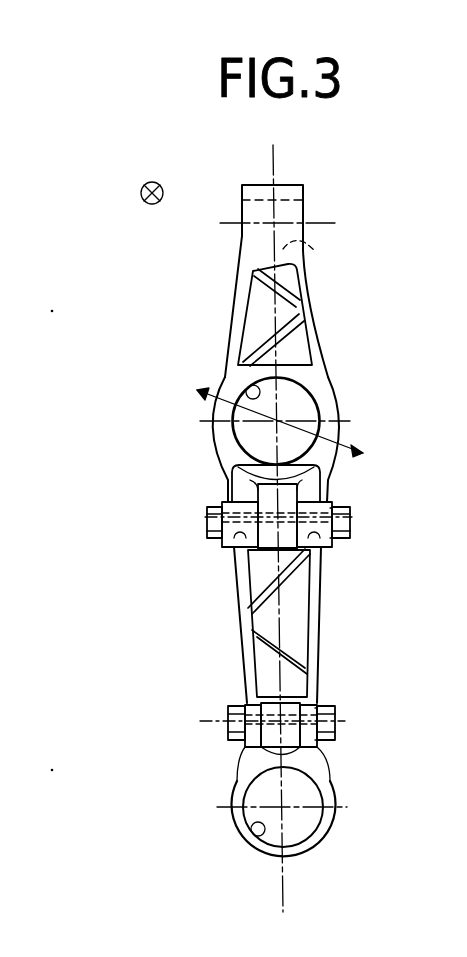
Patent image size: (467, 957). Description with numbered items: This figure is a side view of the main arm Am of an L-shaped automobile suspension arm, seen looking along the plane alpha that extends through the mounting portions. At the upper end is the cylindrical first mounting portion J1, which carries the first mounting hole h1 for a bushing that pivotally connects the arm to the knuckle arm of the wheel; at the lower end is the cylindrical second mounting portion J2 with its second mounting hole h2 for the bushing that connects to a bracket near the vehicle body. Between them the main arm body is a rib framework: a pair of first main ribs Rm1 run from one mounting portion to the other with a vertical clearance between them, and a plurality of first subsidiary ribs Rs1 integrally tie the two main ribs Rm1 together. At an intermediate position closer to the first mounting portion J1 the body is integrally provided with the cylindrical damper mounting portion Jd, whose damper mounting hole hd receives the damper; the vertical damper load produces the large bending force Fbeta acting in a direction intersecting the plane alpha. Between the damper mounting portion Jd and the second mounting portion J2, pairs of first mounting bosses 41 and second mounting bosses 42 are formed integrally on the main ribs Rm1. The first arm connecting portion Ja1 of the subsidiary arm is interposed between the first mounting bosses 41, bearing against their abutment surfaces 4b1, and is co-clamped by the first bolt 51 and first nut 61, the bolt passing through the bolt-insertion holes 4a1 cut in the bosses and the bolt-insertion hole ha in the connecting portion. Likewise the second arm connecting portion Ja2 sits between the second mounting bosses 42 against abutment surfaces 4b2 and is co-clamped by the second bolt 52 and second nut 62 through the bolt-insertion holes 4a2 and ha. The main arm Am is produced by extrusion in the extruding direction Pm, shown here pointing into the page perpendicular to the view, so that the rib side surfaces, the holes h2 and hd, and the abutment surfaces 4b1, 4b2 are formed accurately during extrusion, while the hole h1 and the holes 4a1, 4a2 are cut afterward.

The first mounting portion J1 is at (307, 181).
The first mounting hole h1 is at (316, 244).
The first main ribs Rm1 is at (236, 291).
The first subsidiary ribs Rs1 is at (250, 350).
The damper mounting hole hd is at (246, 391).
The damper mounting portion Jd is at (339, 386).
The bending force Fbeta is at (198, 396).
The main arm Am is at (357, 429).
The first arm connecting portion Ja1 is at (234, 476).
The abutment surfaces 4b1 is at (224, 502).
The first nut 61 is at (208, 524).
The first bolt 51 is at (345, 526).
The bolt-insertion holes ha is at (351, 515).
The bolt-insertion holes 4a1 is at (226, 550).
The first mounting bosses 41 is at (278, 542).
The second mounting bosses 42 is at (280, 706).
The abutment surfaces 4b2 is at (250, 753).
The second nut 62 is at (246, 700).
The second bolt 52 is at (324, 708).
The bolt-insertion holes 4a2 is at (382, 753).
The second mounting portion J2 is at (330, 839).
The second arm connecting portion Ja2 is at (238, 808).
The second mounting hole h2 is at (261, 836).
The extruding direction Pm is at (142, 195).
The plane alpha is at (268, 170).